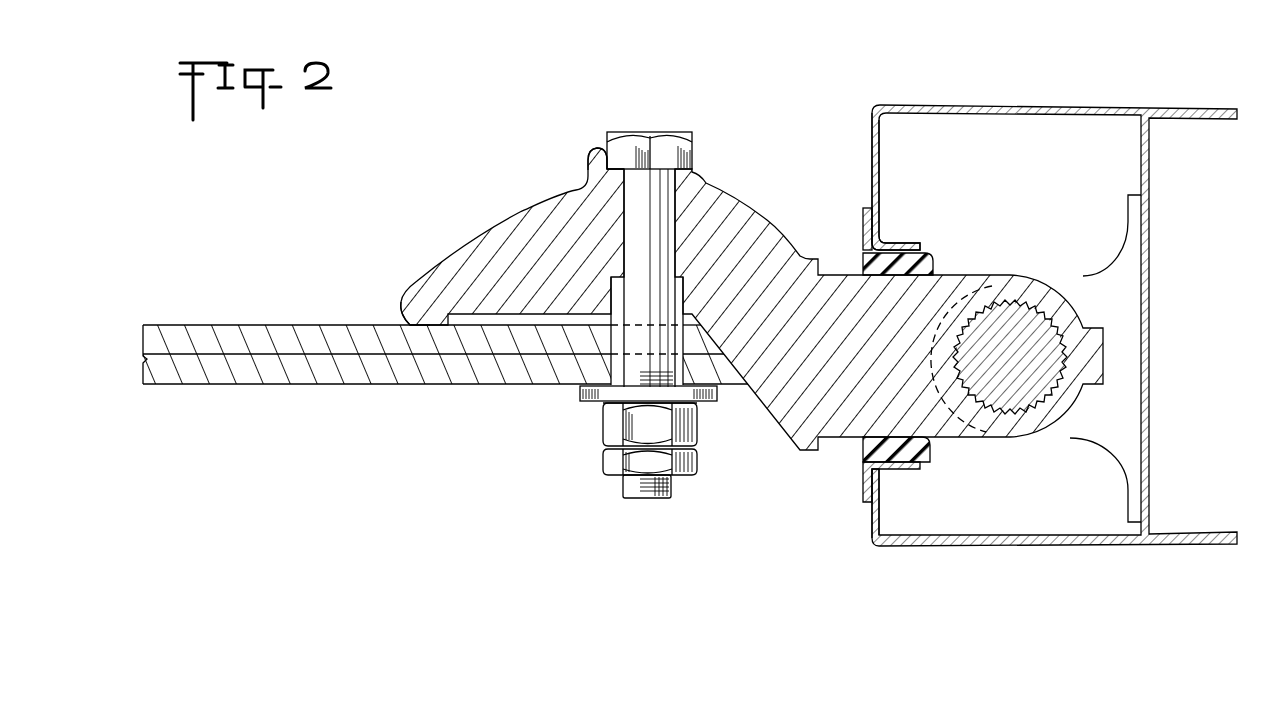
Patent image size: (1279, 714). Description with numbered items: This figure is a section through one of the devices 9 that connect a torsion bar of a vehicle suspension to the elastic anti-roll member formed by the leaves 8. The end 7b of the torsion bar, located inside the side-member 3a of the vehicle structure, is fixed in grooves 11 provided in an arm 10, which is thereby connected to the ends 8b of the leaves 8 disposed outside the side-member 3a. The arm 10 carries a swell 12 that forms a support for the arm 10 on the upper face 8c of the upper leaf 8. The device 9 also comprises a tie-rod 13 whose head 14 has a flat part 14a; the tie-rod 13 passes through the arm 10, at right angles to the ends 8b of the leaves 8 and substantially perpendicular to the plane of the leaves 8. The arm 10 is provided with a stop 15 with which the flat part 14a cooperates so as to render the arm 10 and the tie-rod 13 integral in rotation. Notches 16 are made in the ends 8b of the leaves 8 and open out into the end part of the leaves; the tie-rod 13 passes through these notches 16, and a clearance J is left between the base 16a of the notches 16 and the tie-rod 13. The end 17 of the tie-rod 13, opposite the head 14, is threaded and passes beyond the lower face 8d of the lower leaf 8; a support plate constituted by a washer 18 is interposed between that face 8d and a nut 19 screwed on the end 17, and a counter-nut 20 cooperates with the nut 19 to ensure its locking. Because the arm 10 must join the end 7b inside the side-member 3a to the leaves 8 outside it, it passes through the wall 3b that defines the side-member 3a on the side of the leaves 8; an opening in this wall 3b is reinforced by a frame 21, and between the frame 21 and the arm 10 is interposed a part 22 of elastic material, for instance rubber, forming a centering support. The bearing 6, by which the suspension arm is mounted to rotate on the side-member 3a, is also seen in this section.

The side-member 3a is at (1050, 94).
The wall 3b is at (877, 152).
The bearing 6 is at (1090, 290).
The end of the torsion bar 7b is at (1030, 347).
The leaves 8 is at (225, 393).
The end of the leaves 8b is at (455, 345).
The upper face of the upper leaf 8c is at (194, 320).
The lower face of the lower leaf 8d is at (298, 392).
The device 9 is at (772, 206).
The arm 10 is at (792, 377).
The grooves 11 is at (990, 390).
The swell 12 is at (408, 332).
The tie-rod 13 is at (662, 224).
The head of the tie-rod 14 is at (670, 142).
The flat part 14a is at (602, 142).
The stop 15 is at (595, 157).
The notches 16 is at (672, 338).
The base of the notches 16a is at (622, 393).
The end of the tie-rod 17 is at (638, 488).
The washer 18 is at (620, 405).
The nut 19 is at (687, 428).
The counter-nut 20 is at (687, 466).
The frame 21 is at (898, 246).
The part of elastic material 22 is at (927, 260).
The clearance J is at (636, 277).